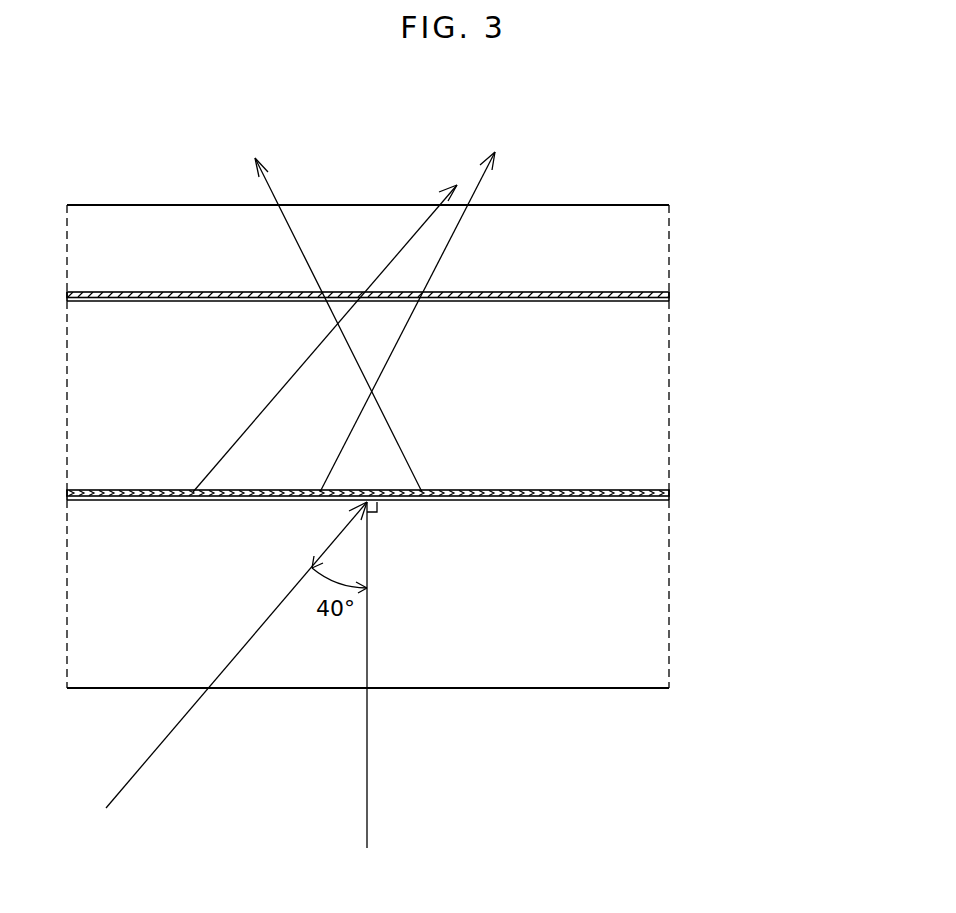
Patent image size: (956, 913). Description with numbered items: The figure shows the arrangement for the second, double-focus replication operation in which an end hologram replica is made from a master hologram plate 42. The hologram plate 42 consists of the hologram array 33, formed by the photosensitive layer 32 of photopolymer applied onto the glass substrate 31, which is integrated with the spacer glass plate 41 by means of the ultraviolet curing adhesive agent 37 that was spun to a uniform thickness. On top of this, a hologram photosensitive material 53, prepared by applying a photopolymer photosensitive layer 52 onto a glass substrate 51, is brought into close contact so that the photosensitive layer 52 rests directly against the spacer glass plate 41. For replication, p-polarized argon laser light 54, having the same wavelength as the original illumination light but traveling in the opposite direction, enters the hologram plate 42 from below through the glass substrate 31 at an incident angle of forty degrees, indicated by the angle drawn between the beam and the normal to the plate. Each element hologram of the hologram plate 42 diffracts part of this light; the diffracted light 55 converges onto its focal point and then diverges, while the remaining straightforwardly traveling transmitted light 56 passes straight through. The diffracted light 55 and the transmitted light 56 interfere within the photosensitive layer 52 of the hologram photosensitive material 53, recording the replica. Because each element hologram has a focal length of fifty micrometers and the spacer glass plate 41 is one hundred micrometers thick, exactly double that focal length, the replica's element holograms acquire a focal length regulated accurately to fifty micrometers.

The glass substrate 31 is at (660, 602).
The photosensitive layer 32 is at (669, 499).
The hologram array 33 is at (740, 497).
The ultraviolet curing adhesive agent 37 is at (669, 491).
The spacer glass plate 41 is at (660, 398).
The hologram plate 42 is at (799, 297).
The glass substrate 51 is at (664, 246).
The photosensitive layer 52 is at (669, 296).
The photosensitive material 53 is at (737, 218).
The p-polarized argon laser light 54 is at (150, 757).
The diffracted light 55 is at (270, 183).
The transmitted light 56 is at (407, 238).